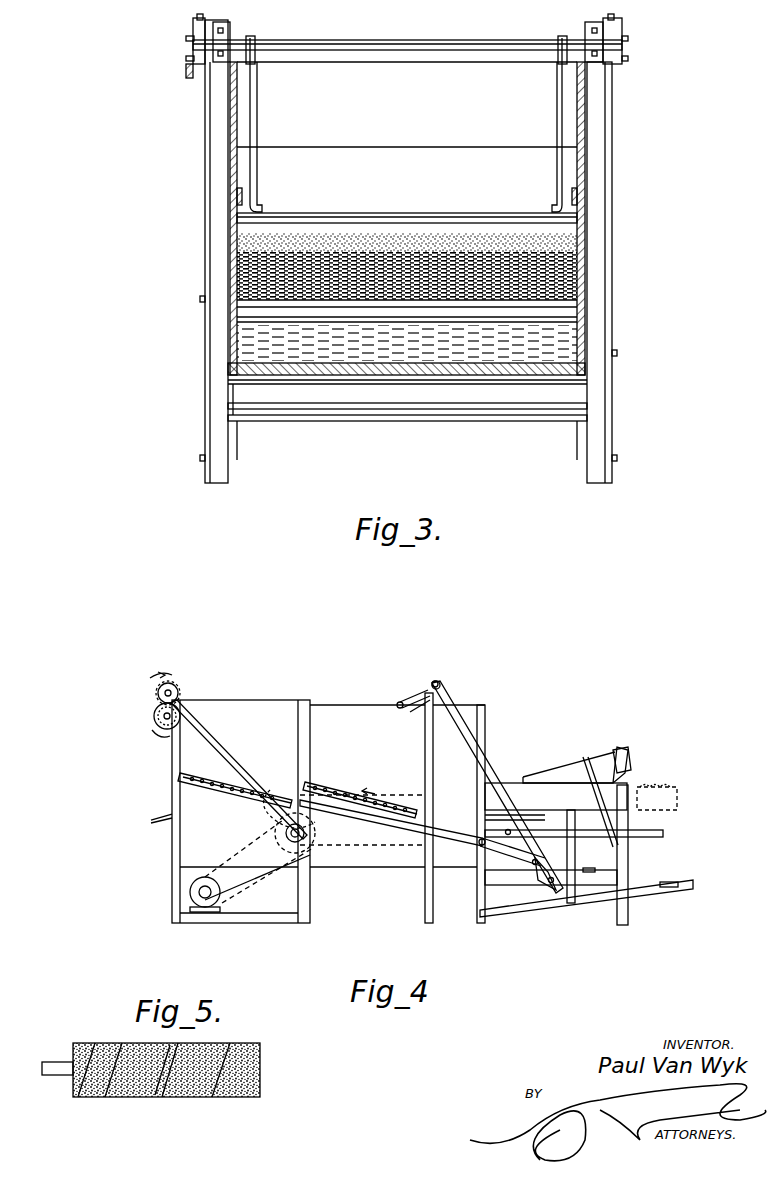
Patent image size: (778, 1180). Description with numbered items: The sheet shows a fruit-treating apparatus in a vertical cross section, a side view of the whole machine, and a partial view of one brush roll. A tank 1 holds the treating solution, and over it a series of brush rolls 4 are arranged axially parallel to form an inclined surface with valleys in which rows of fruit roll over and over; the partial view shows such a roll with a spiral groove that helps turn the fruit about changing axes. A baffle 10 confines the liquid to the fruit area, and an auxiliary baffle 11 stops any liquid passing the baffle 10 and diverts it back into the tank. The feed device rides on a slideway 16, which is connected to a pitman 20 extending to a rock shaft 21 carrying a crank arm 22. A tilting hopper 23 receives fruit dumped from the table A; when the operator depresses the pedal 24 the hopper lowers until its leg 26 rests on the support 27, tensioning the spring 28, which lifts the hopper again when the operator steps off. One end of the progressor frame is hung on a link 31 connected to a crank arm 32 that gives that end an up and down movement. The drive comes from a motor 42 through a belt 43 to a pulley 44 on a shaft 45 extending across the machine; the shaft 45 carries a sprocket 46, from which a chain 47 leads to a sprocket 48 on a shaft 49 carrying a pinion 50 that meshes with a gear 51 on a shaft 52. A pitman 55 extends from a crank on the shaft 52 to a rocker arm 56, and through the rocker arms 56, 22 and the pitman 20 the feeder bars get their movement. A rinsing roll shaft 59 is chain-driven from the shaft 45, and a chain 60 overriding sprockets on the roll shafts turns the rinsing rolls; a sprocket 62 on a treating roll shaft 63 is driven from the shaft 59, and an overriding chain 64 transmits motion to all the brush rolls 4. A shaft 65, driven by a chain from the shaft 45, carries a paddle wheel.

In FIG. 3, the tank 1 is at (350, 372).
In FIG. 3, the brush rolls 4 is at (412, 245).
In FIG. 5, the brush rolls 4 is at (151, 1070).
In FIG. 3, the baffle 10 is at (407, 188).
In FIG. 3, the auxiliary baffle 11 is at (404, 100).
In FIG. 4, the slideway 16 is at (508, 840).
In FIG. 3, the pitman 20 is at (205, 208).
In FIG. 4, the pitman 20 is at (487, 775).
In FIG. 3, the rock shaft 21 is at (349, 42).
In FIG. 4, the crank arm 22 is at (429, 680).
In FIG. 4, the tilting hopper 23 is at (575, 765).
In FIG. 4, the pedal 24 is at (679, 884).
In FIG. 4, the leg 26 is at (585, 755).
In FIG. 4, the support 27 is at (589, 861).
In FIG. 4, the spring 28 is at (595, 822).
In FIG. 3, the link 31 is at (257, 125).
In FIG. 3, the crank arm 32 is at (255, 52).
In FIG. 4, the crank arm 32 is at (407, 698).
In FIG. 4, the motor 42 is at (190, 888).
In FIG. 4, the belt 43 is at (272, 879).
In FIG. 4, the pulley 44 is at (302, 850).
In FIG. 4, the shaft 45 is at (285, 833).
In FIG. 4, the sprocket 46 is at (306, 835).
In FIG. 4, the chain 47 is at (227, 755).
In FIG. 4, the sprocket 48 is at (156, 722).
In FIG. 4, the shaft 49 is at (154, 716).
In FIG. 4, the pinion 50 is at (184, 692).
In FIG. 4, the gear 51 is at (168, 666).
In FIG. 4, the shaft 52 is at (156, 695).
In FIG. 3, the pitman 55 is at (190, 70).
In FIG. 4, the pitman 55 is at (315, 708).
In FIG. 4, the rocker arm 56 is at (418, 708).
In FIG. 4, the rinsing roll shaft 59 is at (278, 798).
In FIG. 4, the chain 60 is at (210, 790).
In FIG. 4, the sprocket 62 is at (335, 786).
In FIG. 4, the treating roll shaft 63 is at (350, 788).
In FIG. 4, the chain 64 is at (392, 800).
In FIG. 4, the shaft 65 is at (432, 835).
In FIG. 4, the table A is at (665, 801).